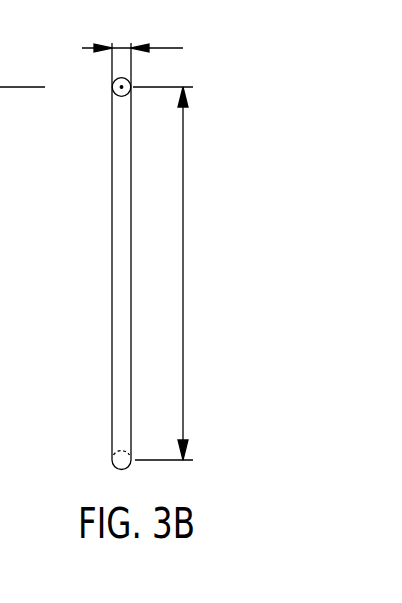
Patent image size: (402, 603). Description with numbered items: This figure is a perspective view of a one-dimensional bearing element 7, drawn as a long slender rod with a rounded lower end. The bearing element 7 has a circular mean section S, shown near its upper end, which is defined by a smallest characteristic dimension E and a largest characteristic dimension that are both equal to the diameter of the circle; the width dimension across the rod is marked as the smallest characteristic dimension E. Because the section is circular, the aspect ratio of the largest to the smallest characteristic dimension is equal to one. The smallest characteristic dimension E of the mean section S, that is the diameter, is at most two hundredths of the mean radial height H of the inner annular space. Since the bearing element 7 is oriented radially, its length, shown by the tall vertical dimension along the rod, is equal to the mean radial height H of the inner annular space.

The one-dimensional bearing element 7 is at (108, 287).
The circular mean section S is at (122, 87).
The smallest characteristic dimension E is at (148, 36).
The mean radial height H is at (186, 273).